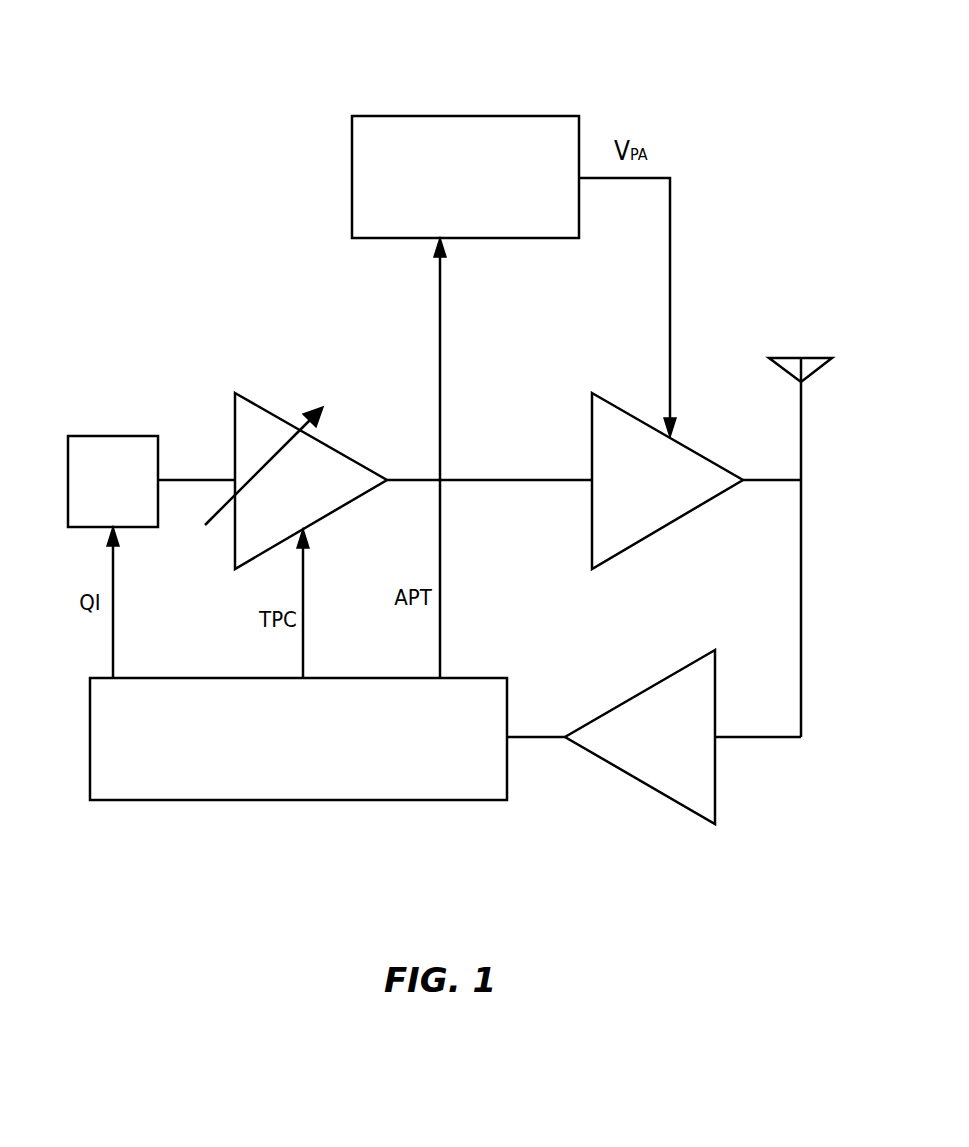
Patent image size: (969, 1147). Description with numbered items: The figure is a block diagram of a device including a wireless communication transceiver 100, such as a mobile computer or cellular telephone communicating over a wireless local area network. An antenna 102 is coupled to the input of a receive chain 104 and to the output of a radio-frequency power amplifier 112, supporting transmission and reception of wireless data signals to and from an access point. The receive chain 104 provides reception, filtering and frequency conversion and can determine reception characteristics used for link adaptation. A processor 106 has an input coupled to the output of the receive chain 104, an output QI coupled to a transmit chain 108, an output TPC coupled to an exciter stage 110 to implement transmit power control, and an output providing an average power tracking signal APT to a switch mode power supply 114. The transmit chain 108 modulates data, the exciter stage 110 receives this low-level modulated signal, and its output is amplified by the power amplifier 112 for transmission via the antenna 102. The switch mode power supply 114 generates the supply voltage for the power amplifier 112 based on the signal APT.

The wireless communication transceiver 100 is at (731, 56).
The antenna 102 is at (799, 407).
The receive chain 104 is at (716, 772).
The processor 106 is at (225, 800).
The transmit chain 108 is at (123, 435).
The exciter stage 110 is at (233, 430).
The radio-frequency power amplifier 112 is at (591, 425).
The switch mode power supply 114 is at (350, 175).